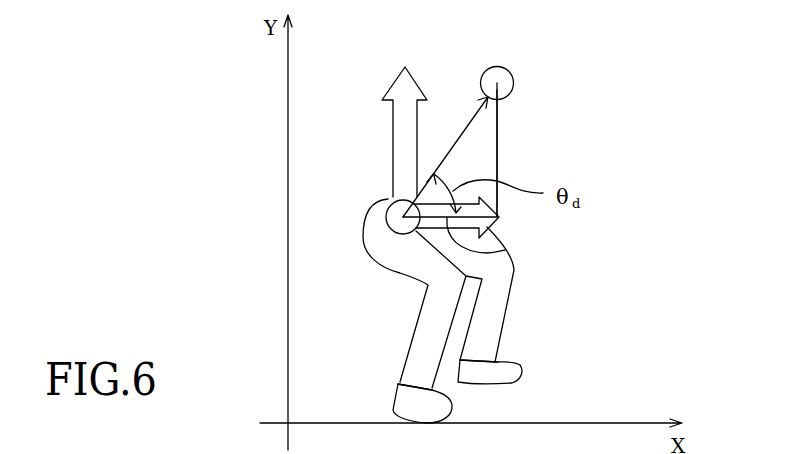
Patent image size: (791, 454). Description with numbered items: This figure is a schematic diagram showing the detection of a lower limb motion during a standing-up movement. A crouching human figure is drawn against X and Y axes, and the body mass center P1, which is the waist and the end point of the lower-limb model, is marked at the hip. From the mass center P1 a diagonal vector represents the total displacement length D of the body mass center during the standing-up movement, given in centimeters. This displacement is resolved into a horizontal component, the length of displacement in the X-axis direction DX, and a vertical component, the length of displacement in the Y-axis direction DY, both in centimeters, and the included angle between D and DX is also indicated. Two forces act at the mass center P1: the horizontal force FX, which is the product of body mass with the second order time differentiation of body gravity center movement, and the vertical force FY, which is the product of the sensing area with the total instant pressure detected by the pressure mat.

The mass center of the body P1 is at (388, 229).
The total displacement length of the body mass center D is at (462, 135).
The vertical force FY is at (396, 126).
The horizontal force FX is at (476, 217).
The length of displacement in Y-axis direction DY is at (497, 158).
The length of displacement in X-axis direction DX is at (505, 250).